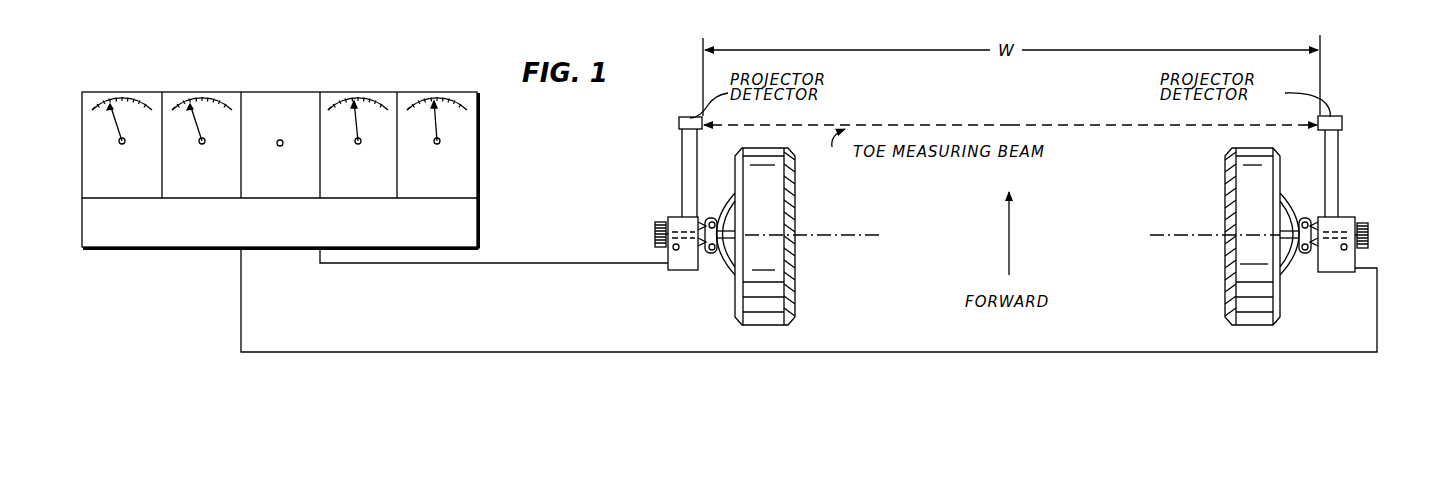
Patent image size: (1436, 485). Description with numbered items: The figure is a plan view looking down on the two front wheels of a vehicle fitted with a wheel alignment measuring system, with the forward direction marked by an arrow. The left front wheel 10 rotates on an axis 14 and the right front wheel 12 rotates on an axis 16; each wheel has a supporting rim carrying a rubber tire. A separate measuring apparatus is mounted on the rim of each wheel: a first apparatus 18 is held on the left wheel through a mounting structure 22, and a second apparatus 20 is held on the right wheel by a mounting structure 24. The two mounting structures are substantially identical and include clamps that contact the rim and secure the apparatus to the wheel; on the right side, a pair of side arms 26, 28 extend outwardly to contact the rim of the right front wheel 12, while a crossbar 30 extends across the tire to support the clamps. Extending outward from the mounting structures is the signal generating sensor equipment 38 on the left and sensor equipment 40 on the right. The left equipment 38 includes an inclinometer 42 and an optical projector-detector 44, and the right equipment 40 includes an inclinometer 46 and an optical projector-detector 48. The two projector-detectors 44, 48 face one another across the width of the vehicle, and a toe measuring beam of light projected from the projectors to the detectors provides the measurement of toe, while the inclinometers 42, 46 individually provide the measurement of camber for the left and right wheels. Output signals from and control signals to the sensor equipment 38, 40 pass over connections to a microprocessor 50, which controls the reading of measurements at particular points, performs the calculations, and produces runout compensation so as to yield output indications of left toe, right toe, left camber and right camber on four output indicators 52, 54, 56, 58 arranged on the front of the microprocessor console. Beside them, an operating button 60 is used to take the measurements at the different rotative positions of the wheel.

The left front wheel 10 is at (775, 288).
The right front wheel 12 is at (1243, 298).
The axis 14 is at (760, 232).
The axis 16 is at (1242, 228).
The first apparatus 18 is at (710, 286).
The second apparatus 20 is at (1333, 277).
The mounting structure 22 is at (713, 191).
The mounting structure 24 is at (1308, 190).
The side arm 26 is at (1300, 273).
The side arm 28 is at (1303, 212).
The crossbar 30 is at (1318, 222).
The signal generating sensor equipment 38 is at (660, 215).
The signal generating sensor equipment 40 is at (1366, 221).
The inclinometer 42 is at (677, 270).
The optical projector-detector 44 is at (688, 140).
The inclinometer 46 is at (1342, 265).
The optical projector-detector 48 is at (1336, 138).
The microprocessor 50 is at (463, 218).
The output indicator 52 is at (100, 92).
The output indicator 54 is at (224, 93).
The output indicator 56 is at (333, 92).
The output indicator 58 is at (456, 93).
The operating button 60 is at (292, 104).